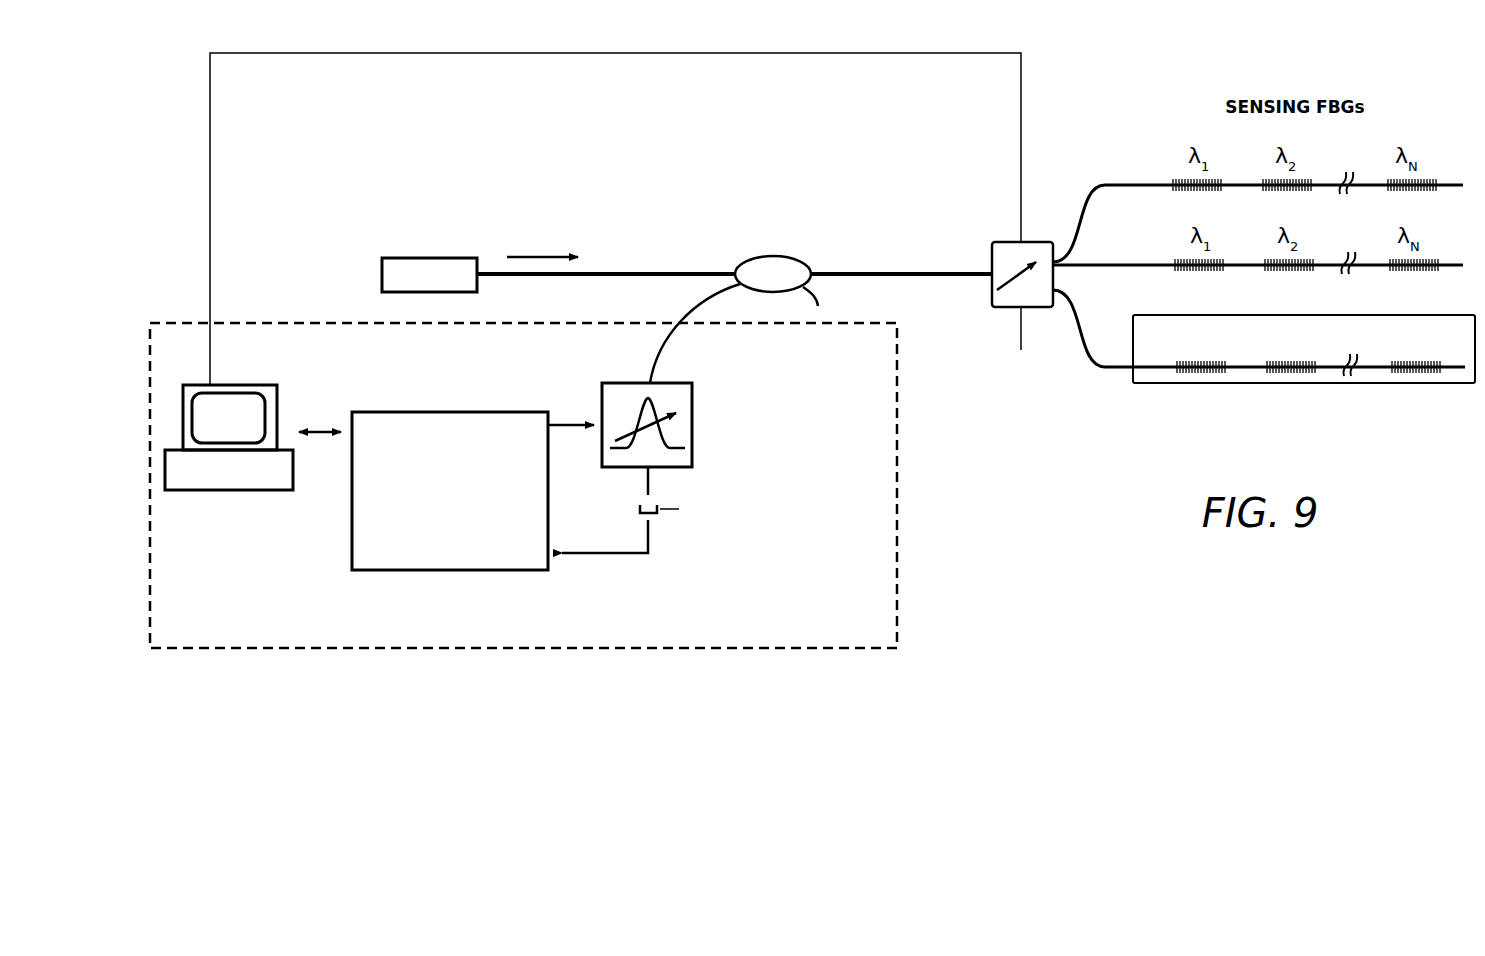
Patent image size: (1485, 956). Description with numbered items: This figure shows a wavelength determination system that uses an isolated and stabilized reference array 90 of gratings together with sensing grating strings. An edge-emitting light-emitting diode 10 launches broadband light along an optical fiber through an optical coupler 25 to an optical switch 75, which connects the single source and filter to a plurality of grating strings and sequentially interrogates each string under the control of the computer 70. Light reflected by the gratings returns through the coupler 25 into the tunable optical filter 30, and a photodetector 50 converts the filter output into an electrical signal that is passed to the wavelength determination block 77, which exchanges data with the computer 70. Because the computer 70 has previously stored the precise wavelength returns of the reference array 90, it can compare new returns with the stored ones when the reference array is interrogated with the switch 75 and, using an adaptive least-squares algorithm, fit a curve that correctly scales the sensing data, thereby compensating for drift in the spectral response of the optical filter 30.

The edge-emitting light-emitting diode 10 is at (430, 228).
The optical coupler 25 is at (773, 246).
The tunable optical filter 30 is at (712, 468).
The photodetector 50 is at (697, 510).
The computer 70 is at (242, 500).
The optical switch 75 is at (1022, 309).
The wavelength determination unit 77 is at (492, 410).
The reference array 90 is at (1168, 387).